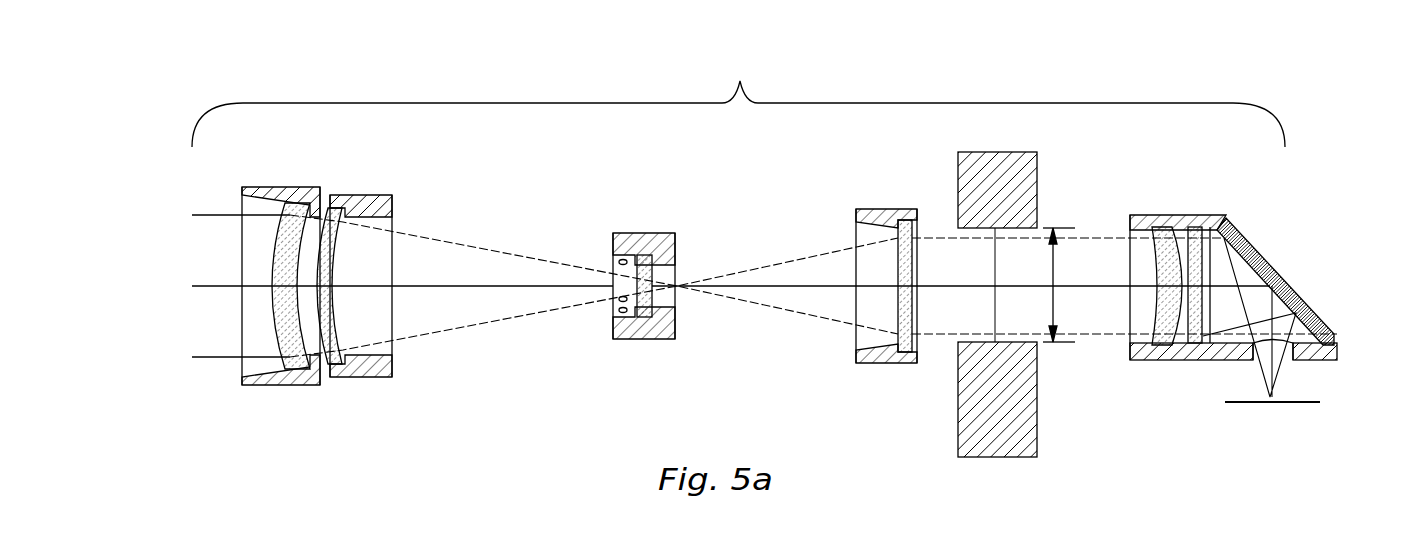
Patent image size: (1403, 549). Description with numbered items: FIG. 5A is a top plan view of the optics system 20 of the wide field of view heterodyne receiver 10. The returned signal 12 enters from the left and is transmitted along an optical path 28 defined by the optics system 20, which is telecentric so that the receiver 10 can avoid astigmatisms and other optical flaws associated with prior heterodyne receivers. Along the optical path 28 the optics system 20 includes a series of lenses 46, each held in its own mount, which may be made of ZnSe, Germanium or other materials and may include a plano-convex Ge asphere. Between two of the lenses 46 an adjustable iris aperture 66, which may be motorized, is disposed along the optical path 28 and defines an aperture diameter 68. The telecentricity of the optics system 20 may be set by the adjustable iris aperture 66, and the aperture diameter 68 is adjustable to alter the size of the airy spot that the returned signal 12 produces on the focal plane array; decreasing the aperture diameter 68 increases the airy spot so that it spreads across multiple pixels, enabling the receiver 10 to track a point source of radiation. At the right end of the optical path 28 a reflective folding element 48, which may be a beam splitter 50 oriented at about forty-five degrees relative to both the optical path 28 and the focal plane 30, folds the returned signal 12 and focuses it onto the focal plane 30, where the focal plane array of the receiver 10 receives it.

The wide field of view heterodyne receiver 10 is at (793, 276).
The returned signal 12 is at (215, 357).
The optics system 20 is at (738, 103).
The optical path 28 is at (738, 103).
The focal plane 30 is at (1303, 401).
The lens 46 is at (355, 377).
The reflective folding element 48 is at (1252, 307).
The beam splitter 50 is at (1257, 253).
The adjustable iris aperture 66 is at (957, 341).
The aperture diameter 68 is at (1055, 266).